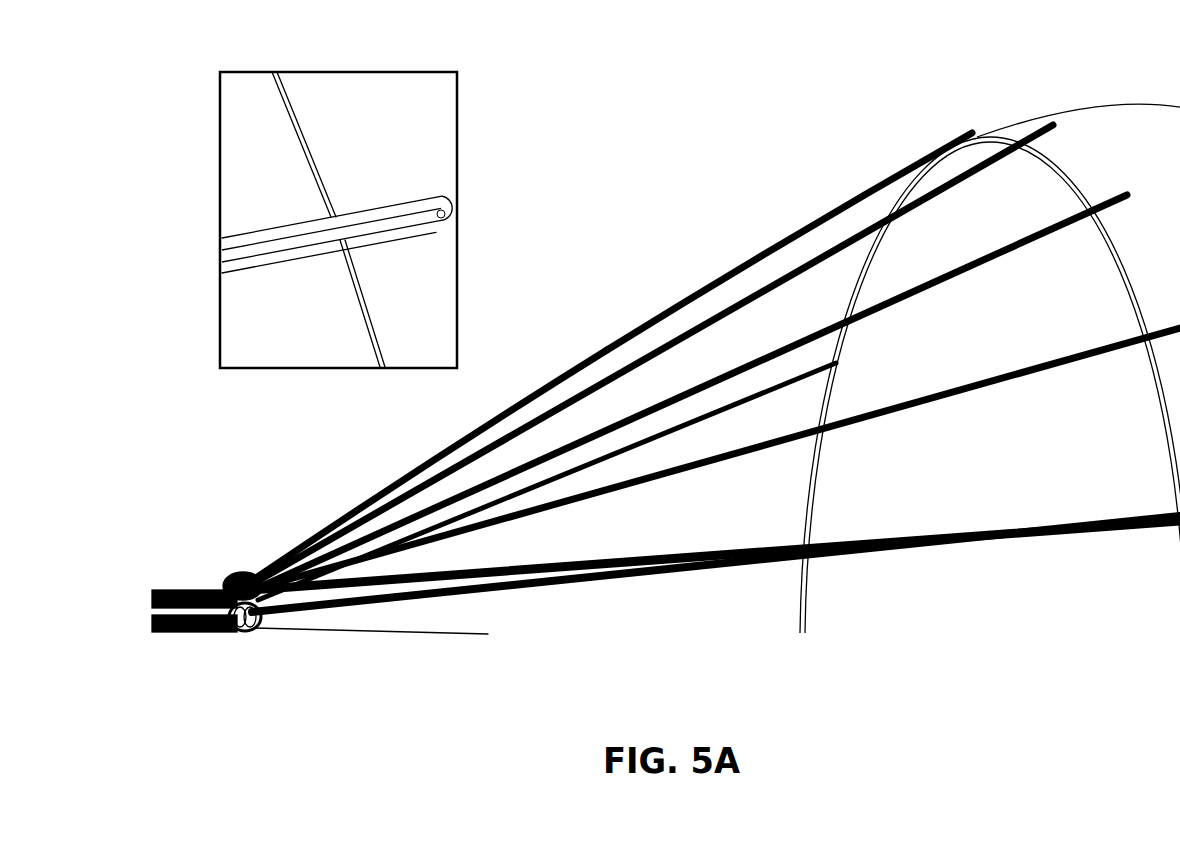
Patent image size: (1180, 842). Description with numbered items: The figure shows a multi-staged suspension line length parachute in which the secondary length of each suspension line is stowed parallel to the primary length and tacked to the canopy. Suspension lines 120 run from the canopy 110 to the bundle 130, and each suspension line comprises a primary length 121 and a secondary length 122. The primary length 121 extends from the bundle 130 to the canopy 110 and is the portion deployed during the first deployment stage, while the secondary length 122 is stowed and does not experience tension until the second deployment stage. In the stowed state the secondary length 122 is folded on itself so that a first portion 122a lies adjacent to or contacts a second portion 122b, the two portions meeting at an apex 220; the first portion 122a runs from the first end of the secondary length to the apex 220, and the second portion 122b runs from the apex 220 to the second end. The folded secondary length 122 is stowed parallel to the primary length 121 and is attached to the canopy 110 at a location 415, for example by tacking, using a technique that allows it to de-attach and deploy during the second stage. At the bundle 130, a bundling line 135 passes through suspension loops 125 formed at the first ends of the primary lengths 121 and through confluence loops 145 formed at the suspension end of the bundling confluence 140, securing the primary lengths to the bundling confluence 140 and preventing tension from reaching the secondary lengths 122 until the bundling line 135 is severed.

The canopy 110 is at (1118, 122).
The suspension lines 120 is at (701, 353).
The primary length 121 is at (620, 347).
The secondary length 122 is at (597, 325).
The first portion of secondary length 122a is at (278, 231).
The second portion of secondary length 122b is at (323, 236).
The suspension loop 125 is at (256, 554).
The bundle 130 is at (211, 597).
The bundling line 135 is at (228, 576).
The bundling confluence 140 is at (177, 628).
The confluence loops 145 is at (247, 632).
The apex 220 is at (456, 202).
The location 415 is at (1044, 119).